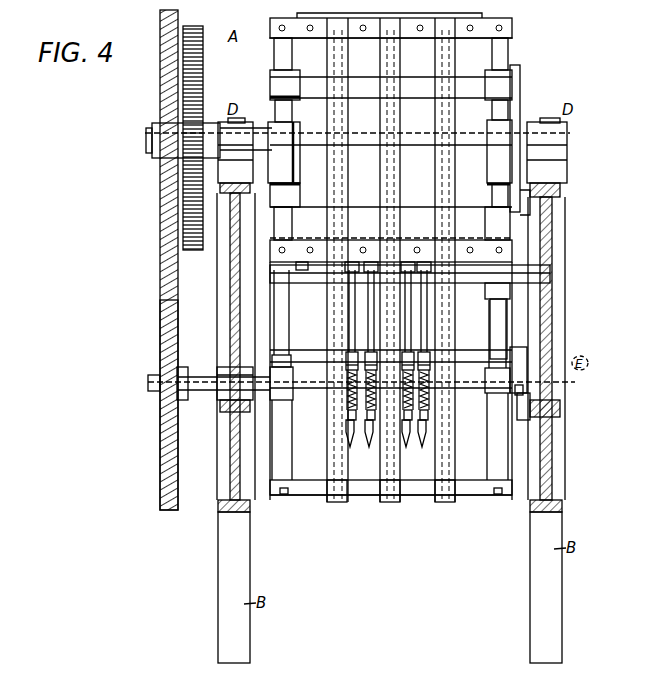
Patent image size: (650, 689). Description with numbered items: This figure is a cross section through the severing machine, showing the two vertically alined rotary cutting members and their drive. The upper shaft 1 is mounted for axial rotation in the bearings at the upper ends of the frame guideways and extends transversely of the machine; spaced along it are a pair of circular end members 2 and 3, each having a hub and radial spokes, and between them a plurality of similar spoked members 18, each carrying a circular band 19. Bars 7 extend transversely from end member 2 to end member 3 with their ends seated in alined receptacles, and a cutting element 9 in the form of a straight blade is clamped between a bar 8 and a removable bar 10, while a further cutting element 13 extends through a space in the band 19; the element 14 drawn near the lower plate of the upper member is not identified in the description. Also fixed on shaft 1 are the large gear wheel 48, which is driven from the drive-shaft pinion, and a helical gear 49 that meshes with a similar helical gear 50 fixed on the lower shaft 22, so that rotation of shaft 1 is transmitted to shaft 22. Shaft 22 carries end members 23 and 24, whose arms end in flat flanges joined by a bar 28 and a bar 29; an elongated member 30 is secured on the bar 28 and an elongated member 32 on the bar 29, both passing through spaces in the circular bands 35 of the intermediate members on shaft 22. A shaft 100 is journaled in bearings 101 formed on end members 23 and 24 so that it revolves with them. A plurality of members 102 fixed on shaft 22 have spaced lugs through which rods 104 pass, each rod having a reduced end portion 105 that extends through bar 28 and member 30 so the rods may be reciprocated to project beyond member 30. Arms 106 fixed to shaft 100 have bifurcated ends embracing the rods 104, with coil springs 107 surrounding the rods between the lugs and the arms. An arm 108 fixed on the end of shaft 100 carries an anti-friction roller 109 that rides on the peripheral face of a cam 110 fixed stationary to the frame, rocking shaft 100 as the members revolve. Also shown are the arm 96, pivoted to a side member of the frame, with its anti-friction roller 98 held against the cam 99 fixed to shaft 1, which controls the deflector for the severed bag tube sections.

The shaft 1 is at (266, 137).
The end member 2 is at (274, 55).
The end member 3 is at (506, 54).
The bar 7 is at (272, 89).
The bar 8 is at (412, 43).
The cutting element 9 is at (480, 16).
The removable bar 10 is at (318, 40).
The cutting element 13 is at (290, 268).
The bracket 14 is at (302, 248).
The member 18 is at (391, 260).
The circular band 19 is at (430, 219).
The shaft 22 is at (200, 381).
The end member 23 is at (272, 440).
The end member 24 is at (552, 458).
The bar 28 is at (503, 283).
The bar 29 is at (483, 490).
The elongated member 30 is at (545, 268).
The elongated member 32 is at (465, 497).
The circular band 35 is at (330, 503).
The gear wheel 48 is at (192, 254).
The helical gear 49 is at (161, 202).
The helical gear 50 is at (161, 341).
The arm 96 is at (500, 222).
The anti-friction roller 98 is at (520, 210).
The cam 99 is at (519, 90).
The shaft 100 is at (493, 365).
The bearing 101 is at (290, 366).
The member 102 is at (350, 417).
The rod 104 is at (389, 445).
The end portion of reduced diameter 105 is at (372, 284).
The arm 106 is at (346, 372).
The coil spring 107 is at (347, 394).
The arm 108 is at (522, 375).
The anti-friction roller 109 is at (522, 394).
The cam 110 is at (530, 430).